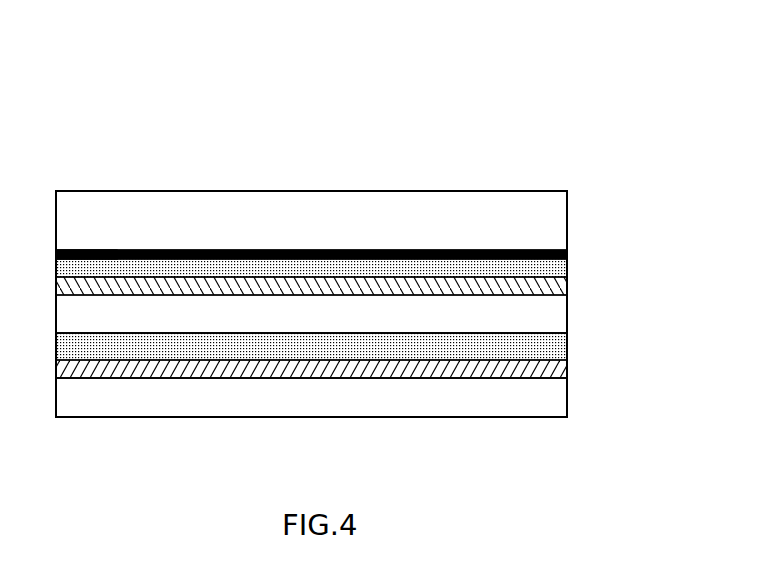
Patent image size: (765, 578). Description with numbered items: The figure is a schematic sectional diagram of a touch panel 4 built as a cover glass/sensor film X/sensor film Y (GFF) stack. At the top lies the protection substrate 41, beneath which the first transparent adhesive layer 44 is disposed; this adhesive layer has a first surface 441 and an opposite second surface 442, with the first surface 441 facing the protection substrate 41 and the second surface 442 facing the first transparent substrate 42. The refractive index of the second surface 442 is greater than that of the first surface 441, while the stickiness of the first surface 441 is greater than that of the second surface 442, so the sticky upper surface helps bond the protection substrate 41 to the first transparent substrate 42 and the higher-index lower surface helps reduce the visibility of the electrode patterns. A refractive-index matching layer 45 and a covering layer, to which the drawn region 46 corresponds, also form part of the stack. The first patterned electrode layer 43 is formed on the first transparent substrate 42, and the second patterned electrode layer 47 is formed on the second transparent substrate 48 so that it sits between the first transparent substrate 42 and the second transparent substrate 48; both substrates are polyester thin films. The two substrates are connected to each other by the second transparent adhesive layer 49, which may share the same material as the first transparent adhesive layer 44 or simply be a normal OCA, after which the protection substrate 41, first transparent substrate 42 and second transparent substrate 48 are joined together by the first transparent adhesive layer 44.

The touch panel 4 is at (182, 110).
The protection substrate 41 is at (562, 218).
The first transparent substrate 42 is at (562, 327).
The first patterned electrode layer 43 is at (553, 294).
The first transparent adhesive layer 44 is at (365, 251).
The first surface 441 is at (567, 254).
The second surface 442 is at (567, 287).
The refractive-index matching layer 45 is at (331, 250).
The black matrix / electrode 46 is at (94, 250).
The second patterned electrode layer 47 is at (566, 369).
The second transparent substrate 48 is at (562, 407).
The second transparent adhesive layer 49 is at (562, 351).